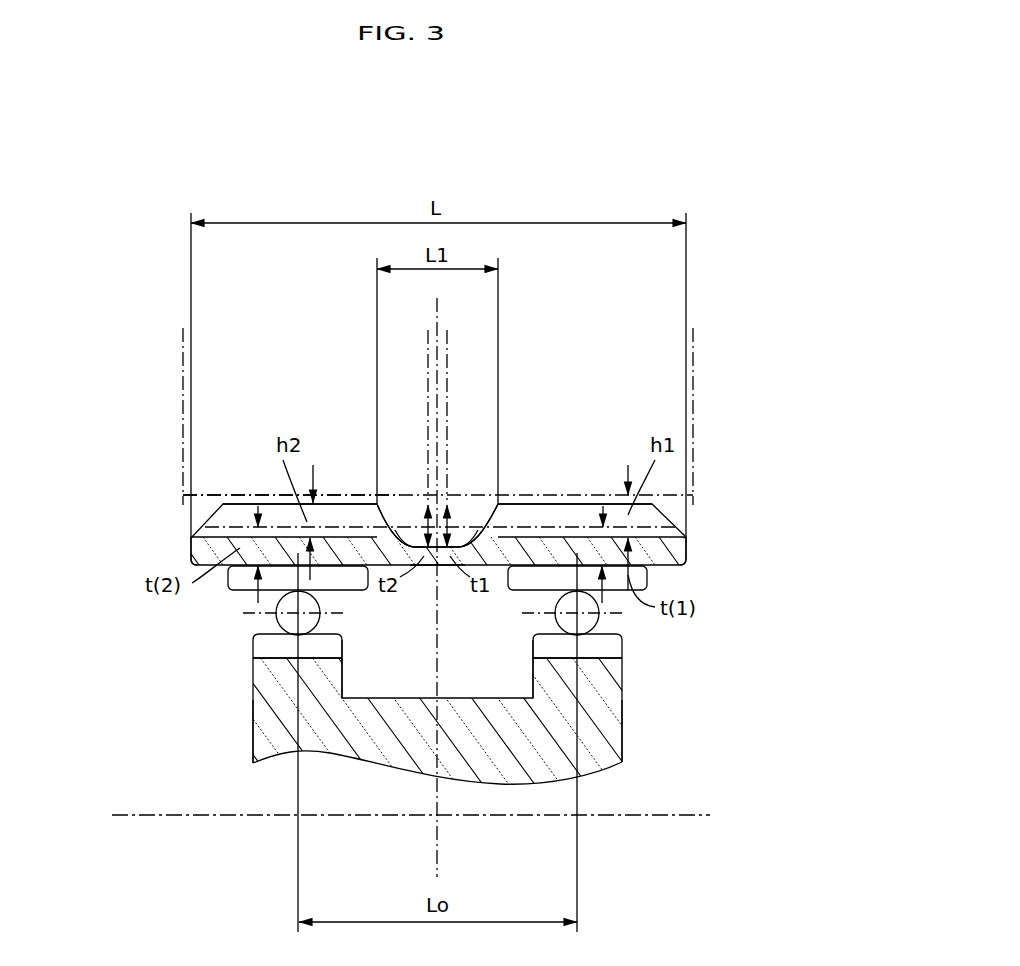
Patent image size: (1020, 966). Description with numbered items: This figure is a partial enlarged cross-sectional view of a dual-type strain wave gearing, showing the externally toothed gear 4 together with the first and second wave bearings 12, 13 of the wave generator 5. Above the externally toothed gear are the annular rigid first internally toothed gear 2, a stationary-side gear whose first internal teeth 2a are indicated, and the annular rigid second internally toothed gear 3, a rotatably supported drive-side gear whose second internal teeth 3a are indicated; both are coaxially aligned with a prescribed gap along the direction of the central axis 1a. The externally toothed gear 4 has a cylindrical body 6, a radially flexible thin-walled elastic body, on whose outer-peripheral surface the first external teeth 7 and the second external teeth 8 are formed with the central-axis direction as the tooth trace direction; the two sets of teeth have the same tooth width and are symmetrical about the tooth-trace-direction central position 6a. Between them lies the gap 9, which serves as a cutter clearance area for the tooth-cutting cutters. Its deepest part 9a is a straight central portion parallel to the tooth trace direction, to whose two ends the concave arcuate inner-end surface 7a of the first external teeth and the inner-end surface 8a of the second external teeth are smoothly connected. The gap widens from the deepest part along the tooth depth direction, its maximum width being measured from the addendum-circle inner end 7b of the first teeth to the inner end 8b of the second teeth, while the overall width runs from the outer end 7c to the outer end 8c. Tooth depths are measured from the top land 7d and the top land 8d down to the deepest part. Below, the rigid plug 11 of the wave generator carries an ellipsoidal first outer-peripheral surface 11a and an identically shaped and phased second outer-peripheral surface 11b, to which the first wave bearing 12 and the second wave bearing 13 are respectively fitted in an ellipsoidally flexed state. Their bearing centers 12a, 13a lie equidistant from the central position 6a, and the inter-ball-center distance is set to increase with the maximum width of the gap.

The central axis 1a is at (648, 815).
The first internally toothed gear 2 is at (698, 432).
The first internal teeth 2a is at (672, 495).
The second internally toothed gear 3 is at (180, 436).
The second internal teeth 3a is at (207, 493).
The externally toothed gear 4 is at (682, 525).
The wave generator 5 is at (670, 723).
The cylindrical body 6 is at (677, 565).
The tooth-trace-direction central position 6a is at (431, 566).
The first external teeth 7 is at (557, 503).
The tooth-trace-direction inner-end surface of the first external teeth 7a is at (485, 512).
The tooth-trace-direction inner end of the addendum circle of the first external tee 7b is at (490, 486).
The tooth-trace-direction outer end of the first external teeth 7c is at (690, 543).
The top land of the first external teeth 7d is at (587, 500).
The second external teeth 8 is at (235, 503).
The tooth-trace-direction inner-end surface of the second external teeth 8a is at (392, 515).
The tooth-trace-direction inner end of the addendum circle of the second external te 8b is at (392, 492).
The tooth-trace-direction outer end of the second external teeth 8c is at (197, 536).
The top land of the second external teeth 8d is at (250, 503).
The gap 9 is at (448, 510).
The deepest part 9a is at (445, 550).
The rigid plug 11 is at (628, 692).
The first outer-peripheral surface 11a is at (600, 655).
The second outer-peripheral surface 11b is at (275, 655).
The first wave bearing 12 is at (620, 616).
The bearing center of the first wave bearing 12a is at (533, 643).
The second wave bearing 13 is at (215, 608).
The bearing center of the second wave bearing 13a is at (342, 643).